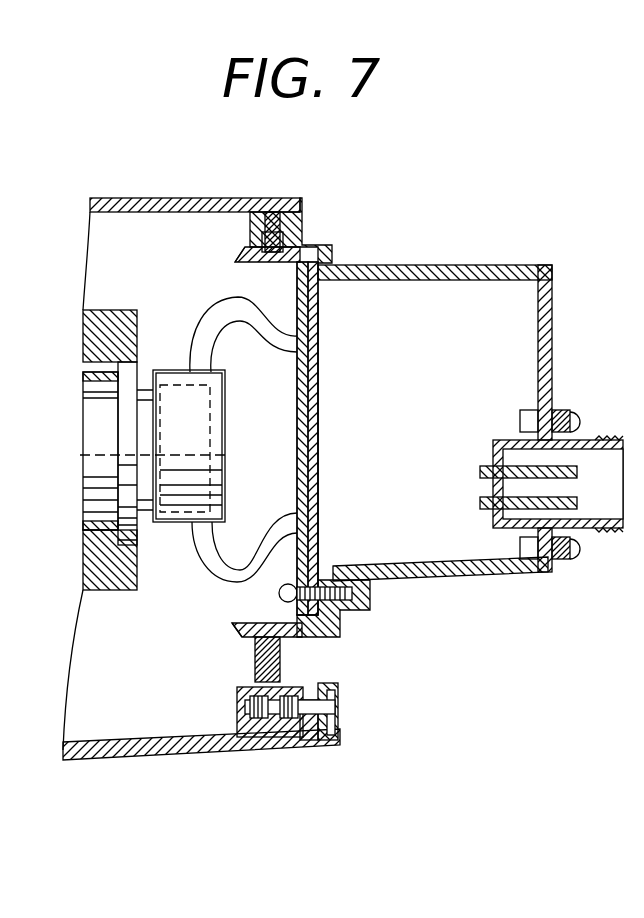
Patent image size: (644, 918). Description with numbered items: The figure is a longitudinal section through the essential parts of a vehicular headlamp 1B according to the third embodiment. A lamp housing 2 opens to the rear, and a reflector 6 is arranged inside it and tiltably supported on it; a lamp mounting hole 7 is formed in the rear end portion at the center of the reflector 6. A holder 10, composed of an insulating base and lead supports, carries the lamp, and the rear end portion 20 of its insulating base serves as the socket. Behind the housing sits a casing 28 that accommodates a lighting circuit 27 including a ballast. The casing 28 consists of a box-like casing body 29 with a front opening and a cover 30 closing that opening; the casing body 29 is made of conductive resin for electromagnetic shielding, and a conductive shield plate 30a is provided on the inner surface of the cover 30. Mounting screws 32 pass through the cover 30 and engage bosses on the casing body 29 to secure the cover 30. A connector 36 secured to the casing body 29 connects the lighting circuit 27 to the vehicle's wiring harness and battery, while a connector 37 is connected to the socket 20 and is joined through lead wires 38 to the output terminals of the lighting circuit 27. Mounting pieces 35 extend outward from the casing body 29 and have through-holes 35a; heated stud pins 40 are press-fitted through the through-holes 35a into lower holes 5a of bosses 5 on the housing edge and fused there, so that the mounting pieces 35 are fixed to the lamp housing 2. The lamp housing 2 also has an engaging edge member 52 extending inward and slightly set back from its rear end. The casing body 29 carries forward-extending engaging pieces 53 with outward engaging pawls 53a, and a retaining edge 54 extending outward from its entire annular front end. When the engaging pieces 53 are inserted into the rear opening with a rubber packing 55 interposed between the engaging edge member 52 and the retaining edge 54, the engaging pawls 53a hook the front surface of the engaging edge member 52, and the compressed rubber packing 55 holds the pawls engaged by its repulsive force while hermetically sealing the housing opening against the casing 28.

The vehicular headlamp 1B is at (432, 163).
The lamp housing 2 is at (135, 198).
The boss 5 is at (230, 748).
The lower hole 5a is at (255, 742).
The reflector 6 is at (88, 575).
The lamp mounting hole 7 is at (85, 398).
The holder 10 is at (78, 480).
The rear end portion of the insulating base 20 is at (145, 365).
The lighting circuit 27 is at (538, 268).
The casing 28 is at (470, 265).
The casing body 29 is at (410, 265).
The cover 30 is at (297, 425).
The shield plate 30a is at (318, 412).
The mounting screw 32 is at (279, 594).
The mounting piece 35 is at (330, 745).
The through-hole 35a is at (300, 742).
The connector 36 is at (500, 445).
The connector 37 is at (180, 522).
The lead wires 38 is at (240, 326).
The stud pin 40 is at (340, 710).
The engaging edge member 52 is at (265, 228).
The engaging piece 53 is at (245, 260).
The engaging pawl 53a is at (242, 252).
The retaining edge 54 is at (300, 222).
The rubber packing 55 is at (275, 215).